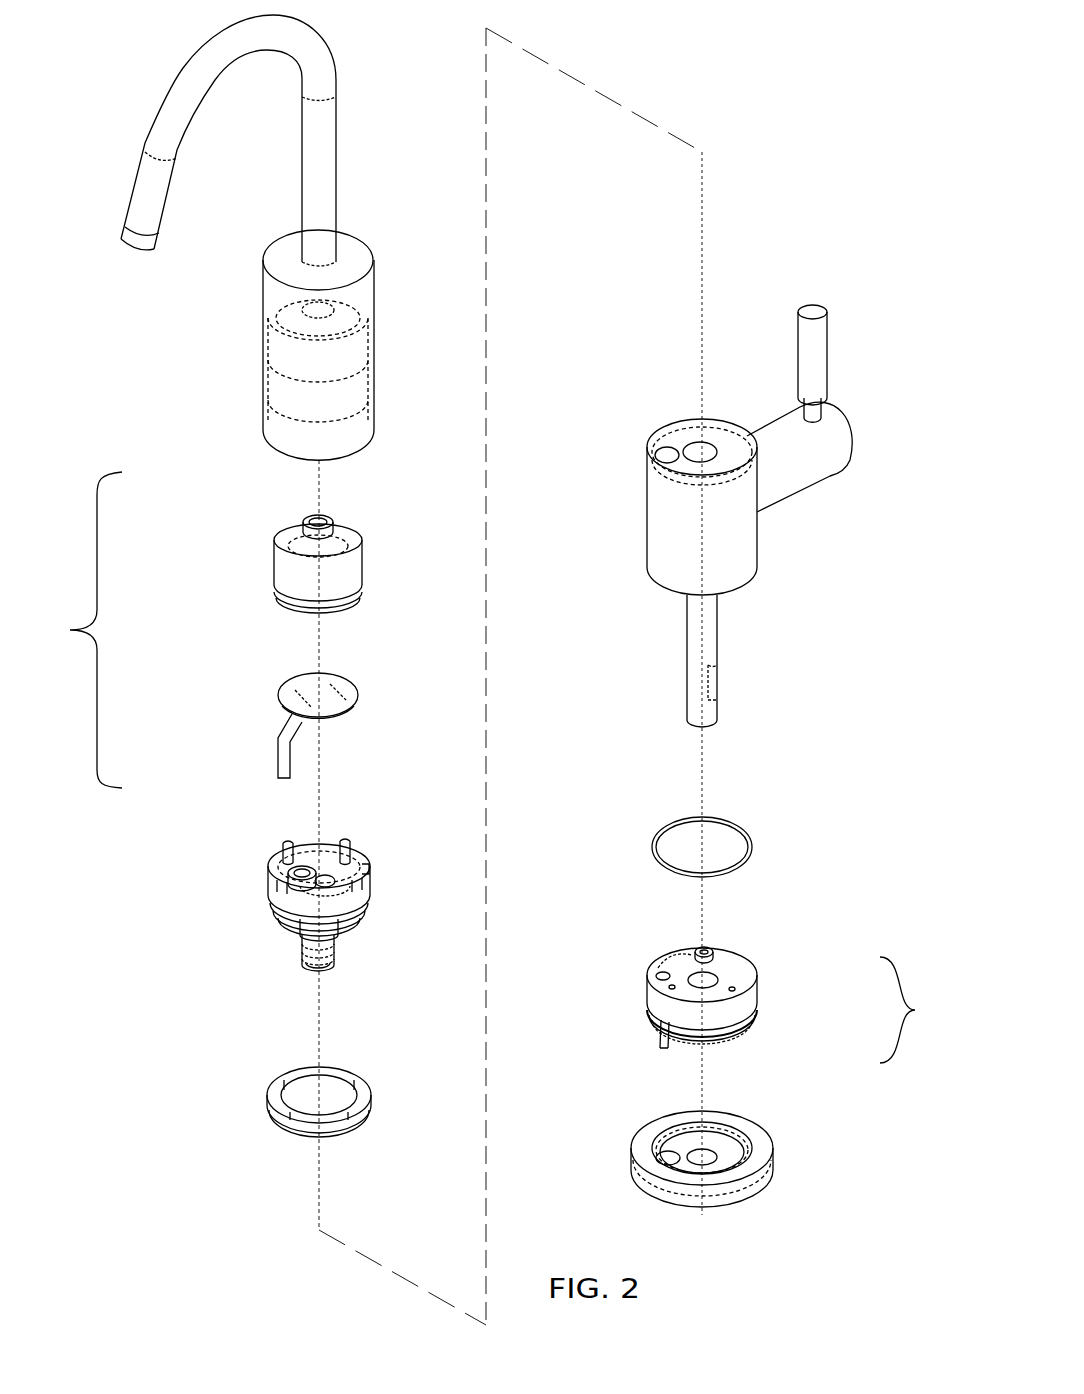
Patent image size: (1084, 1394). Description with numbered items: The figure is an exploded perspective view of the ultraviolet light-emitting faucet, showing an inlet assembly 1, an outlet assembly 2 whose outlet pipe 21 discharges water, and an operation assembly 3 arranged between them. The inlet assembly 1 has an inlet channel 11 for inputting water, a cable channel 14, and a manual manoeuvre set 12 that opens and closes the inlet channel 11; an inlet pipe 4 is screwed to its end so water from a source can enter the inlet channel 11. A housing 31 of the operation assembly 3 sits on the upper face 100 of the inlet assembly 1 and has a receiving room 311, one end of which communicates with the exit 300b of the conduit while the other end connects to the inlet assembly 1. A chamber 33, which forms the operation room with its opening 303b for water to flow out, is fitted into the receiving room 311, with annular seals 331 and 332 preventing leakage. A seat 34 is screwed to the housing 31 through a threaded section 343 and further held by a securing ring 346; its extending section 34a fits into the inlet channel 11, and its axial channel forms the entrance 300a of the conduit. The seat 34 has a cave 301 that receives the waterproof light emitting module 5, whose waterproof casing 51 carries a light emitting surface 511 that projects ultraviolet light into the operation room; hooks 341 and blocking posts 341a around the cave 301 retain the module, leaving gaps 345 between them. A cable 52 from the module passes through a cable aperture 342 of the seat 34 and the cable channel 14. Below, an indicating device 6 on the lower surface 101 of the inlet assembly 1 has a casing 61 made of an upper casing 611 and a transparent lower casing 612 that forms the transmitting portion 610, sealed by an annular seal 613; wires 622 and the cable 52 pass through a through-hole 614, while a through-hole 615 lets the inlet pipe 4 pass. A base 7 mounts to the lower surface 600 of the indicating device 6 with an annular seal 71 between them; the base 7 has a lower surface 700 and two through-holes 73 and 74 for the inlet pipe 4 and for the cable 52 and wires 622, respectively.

The inlet assembly 1 is at (686, 456).
The upper face 100 is at (712, 422).
The lower surface 101 is at (663, 598).
The inlet channel 11 is at (697, 450).
The manual manoeuvre set 12 is at (810, 508).
The cable channel 14 is at (665, 450).
The outlet assembly 2 is at (279, 133).
The outlet pipe 21 is at (218, 50).
The operation assembly 3 is at (82, 630).
The housing 31 is at (296, 358).
The receiving room 311 is at (273, 375).
The exit 300b is at (322, 310).
The entrance 300a is at (310, 980).
The cave 301 is at (330, 856).
The opening 303b is at (324, 516).
The chamber 33 is at (291, 542).
The annular seal 331 is at (352, 592).
The annular seal 332 is at (371, 506).
The seat 34 is at (301, 919).
The extending section 34a is at (310, 932).
The hooks 341 is at (288, 842).
The blocking posts 341a is at (354, 845).
The cable aperture 342 is at (283, 870).
The threaded section 343 is at (358, 912).
The gaps 345 is at (374, 872).
The securing ring 346 is at (283, 1120).
The inlet pipe 4 is at (710, 707).
The waterproof light emitting module 5 is at (332, 713).
The waterproof casing 51 is at (359, 713).
The light emitting surface 511 is at (337, 688).
The cable 52 is at (277, 754).
The indicating device 6 is at (758, 994).
The casing 61 is at (805, 1013).
The lower surface 600 is at (683, 1040).
The transmitting portion 610 is at (730, 1020).
The upper casing 611 is at (752, 984).
The lower casing 612 is at (756, 1012).
The annular seal 613 is at (662, 830).
The through-hole 614 is at (662, 972).
The through-hole 615 is at (712, 976).
The wires 622 is at (660, 1042).
The base 7 is at (700, 1164).
The lower surface 700 is at (672, 1210).
The annular seal 71 is at (752, 1152).
The through-hole 73 is at (712, 1150).
The through-hole 74 is at (665, 1152).